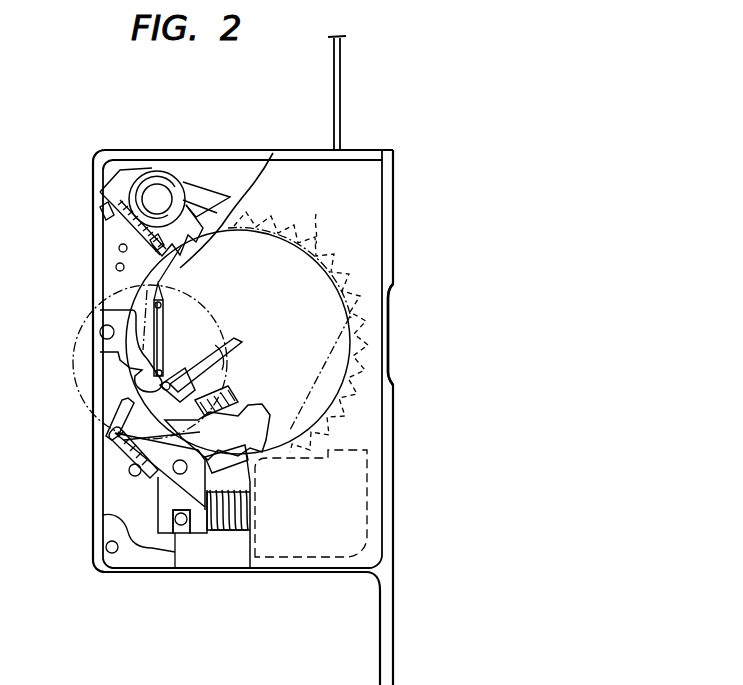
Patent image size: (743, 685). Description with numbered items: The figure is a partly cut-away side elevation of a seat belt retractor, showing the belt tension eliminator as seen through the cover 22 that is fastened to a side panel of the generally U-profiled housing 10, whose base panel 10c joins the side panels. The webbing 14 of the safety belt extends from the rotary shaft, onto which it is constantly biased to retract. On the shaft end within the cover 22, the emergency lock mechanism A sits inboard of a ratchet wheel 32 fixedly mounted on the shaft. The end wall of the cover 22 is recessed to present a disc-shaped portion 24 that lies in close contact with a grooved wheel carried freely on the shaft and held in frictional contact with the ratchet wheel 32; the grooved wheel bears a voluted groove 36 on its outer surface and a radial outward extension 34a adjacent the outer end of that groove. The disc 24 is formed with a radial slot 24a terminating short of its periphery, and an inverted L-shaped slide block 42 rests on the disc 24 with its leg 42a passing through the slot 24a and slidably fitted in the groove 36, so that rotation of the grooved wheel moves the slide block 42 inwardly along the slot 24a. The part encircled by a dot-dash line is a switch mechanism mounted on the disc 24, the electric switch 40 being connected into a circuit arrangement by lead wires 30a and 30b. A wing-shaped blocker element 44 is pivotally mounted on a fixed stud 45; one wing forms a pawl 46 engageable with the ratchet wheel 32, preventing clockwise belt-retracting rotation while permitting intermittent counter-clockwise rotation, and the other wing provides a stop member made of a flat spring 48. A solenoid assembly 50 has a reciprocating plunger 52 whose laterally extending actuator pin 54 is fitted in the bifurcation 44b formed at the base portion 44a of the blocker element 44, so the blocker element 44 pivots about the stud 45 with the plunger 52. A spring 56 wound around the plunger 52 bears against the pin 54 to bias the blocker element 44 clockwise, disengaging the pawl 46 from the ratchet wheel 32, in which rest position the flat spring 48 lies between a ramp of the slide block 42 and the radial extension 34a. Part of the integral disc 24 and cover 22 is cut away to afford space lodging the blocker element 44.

The housing 10 is at (403, 536).
The base panel 10c is at (395, 462).
The webbing 14 is at (342, 82).
The cover 22 is at (302, 160).
The disc-shaped portion 24 is at (343, 268).
The radial slot 24a is at (216, 346).
The lead wire 30a is at (160, 278).
The lead wire 30b is at (155, 285).
The ratchet wheel 32 is at (258, 416).
The radial outward extension 34a is at (98, 372).
The voluted groove 36 is at (232, 402).
The electric switch 40 is at (170, 308).
The slide block 42 is at (196, 388).
The leg 42a is at (212, 325).
The blocker element 44 is at (169, 493).
The base portion 44a is at (170, 516).
The bifurcation 44b is at (178, 530).
The fixed stud 45 is at (156, 476).
The pawl 46 is at (238, 480).
The flat spring 48 is at (116, 414).
The solenoid assembly 50 is at (316, 545).
The plunger 52 is at (240, 530).
The actuator pin 54 is at (182, 526).
The spring 56 is at (214, 532).
The emergency lock mechanism A is at (313, 218).